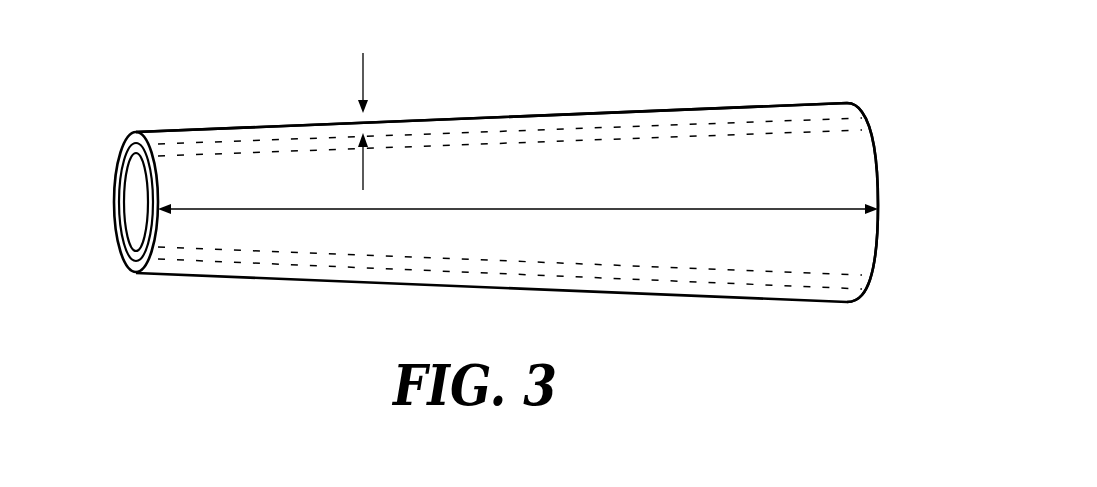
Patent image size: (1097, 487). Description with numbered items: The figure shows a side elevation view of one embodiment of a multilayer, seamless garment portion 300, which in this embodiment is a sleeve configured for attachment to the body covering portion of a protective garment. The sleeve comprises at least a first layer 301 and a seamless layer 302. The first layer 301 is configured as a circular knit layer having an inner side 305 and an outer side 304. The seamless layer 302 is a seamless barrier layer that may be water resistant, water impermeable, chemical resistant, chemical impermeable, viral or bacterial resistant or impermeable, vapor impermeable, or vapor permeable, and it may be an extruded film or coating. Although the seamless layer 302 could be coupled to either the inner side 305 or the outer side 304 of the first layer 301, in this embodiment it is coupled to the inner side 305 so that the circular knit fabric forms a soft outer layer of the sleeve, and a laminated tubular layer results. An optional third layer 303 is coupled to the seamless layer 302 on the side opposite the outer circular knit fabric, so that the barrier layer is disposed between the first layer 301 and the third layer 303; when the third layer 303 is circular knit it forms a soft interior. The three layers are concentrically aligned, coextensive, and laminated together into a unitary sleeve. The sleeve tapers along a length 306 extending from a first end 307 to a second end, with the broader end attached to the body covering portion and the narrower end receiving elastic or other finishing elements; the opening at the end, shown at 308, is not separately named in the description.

The multilayer seamless garment portion 300 is at (222, 101).
The first layer 301 is at (445, 118).
The seamless layer 302 is at (558, 128).
The third layer 303 is at (697, 135).
The outer side 304 is at (362, 86).
The inner side 305 is at (363, 157).
The length 306 is at (685, 210).
The first end 307 is at (886, 182).
The proximal end opening 308 is at (141, 200).